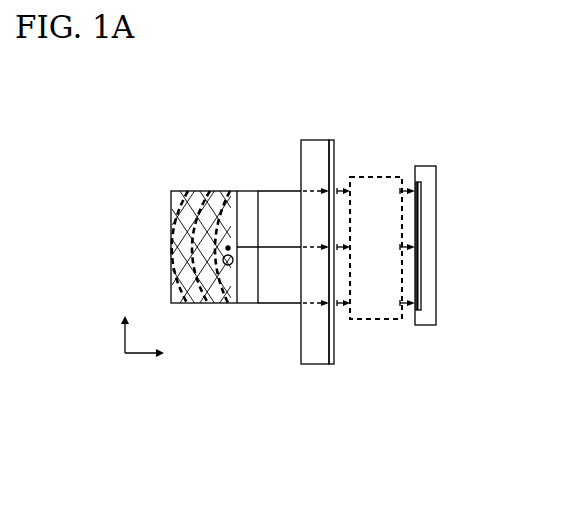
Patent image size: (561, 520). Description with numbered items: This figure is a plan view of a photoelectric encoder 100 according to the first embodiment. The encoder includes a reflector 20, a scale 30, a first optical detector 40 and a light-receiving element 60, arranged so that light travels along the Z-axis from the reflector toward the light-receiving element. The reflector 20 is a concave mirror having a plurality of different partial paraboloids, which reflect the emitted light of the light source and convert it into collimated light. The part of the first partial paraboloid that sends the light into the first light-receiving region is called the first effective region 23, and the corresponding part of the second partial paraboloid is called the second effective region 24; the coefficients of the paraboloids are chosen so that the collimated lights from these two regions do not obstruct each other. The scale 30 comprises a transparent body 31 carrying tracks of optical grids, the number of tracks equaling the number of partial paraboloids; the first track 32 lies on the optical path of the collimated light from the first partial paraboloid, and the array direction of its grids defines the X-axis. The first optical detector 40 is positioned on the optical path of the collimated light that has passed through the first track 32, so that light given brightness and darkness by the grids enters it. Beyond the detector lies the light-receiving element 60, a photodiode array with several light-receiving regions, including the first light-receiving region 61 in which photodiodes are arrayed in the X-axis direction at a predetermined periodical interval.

The photoelectric encoder 100 is at (424, 112).
The reflector 20 is at (148, 158).
The first effective region 23 is at (225, 191).
The second effective region 24 is at (199, 191).
The scale 30 is at (323, 277).
The transparent body 31 is at (306, 140).
The first track 32 is at (334, 140).
The first optical detector 40 is at (368, 177).
The light-receiving element 60 is at (436, 183).
The first light-receiving region 61 is at (420, 218).